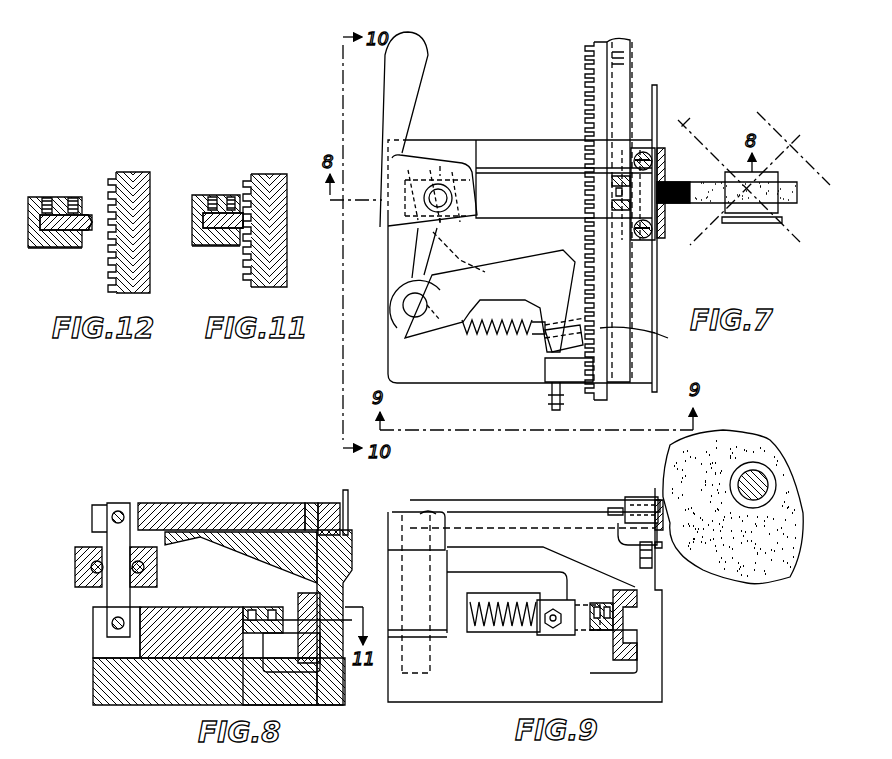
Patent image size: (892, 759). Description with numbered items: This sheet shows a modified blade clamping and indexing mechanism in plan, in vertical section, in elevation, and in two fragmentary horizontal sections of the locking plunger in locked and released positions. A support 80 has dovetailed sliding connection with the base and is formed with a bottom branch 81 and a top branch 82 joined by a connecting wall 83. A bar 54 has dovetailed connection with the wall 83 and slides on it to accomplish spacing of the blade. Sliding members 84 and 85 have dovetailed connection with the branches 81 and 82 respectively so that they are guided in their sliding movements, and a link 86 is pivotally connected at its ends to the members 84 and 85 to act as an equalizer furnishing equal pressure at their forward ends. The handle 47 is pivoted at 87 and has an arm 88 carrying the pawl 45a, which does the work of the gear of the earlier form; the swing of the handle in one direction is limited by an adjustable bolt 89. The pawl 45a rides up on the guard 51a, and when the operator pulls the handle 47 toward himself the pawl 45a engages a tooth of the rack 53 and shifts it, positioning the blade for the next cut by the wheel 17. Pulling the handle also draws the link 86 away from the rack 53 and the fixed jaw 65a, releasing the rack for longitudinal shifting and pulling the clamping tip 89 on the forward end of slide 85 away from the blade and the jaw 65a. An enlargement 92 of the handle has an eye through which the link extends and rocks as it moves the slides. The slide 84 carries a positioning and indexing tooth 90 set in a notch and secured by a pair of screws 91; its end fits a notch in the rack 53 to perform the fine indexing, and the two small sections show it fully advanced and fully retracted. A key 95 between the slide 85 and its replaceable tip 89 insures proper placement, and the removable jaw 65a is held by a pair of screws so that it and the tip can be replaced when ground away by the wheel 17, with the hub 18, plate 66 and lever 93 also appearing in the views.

In FIG. 7, the wheel 17 is at (700, 205).
In FIG. 9, the wheel 17 is at (733, 507).
In FIG. 9, the shaft hub 18 is at (760, 478).
In FIG. 7, the pawl 45a is at (564, 314).
In FIG. 7, the handle 47 is at (405, 91).
In FIG. 7, the guard 51a is at (649, 338).
In FIG. 7, the rack 53 is at (597, 62).
In FIG. 12, the rack 53 is at (126, 175).
In FIG. 11, the rack 53 is at (264, 176).
In FIG. 8, the rack 53 is at (263, 612).
In FIG. 9, the rack 53 is at (601, 616).
In FIG. 7, the bar 54 is at (620, 60).
In FIG. 8, the bar 54 is at (303, 600).
In FIG. 9, the bar 54 is at (613, 631).
In FIG. 7, the fixed jaw 65a is at (661, 158).
In FIG. 8, the fixed jaw 65a is at (349, 505).
In FIG. 9, the fixed jaw 65a is at (662, 537).
In FIG. 7, the side plate 66 is at (658, 95).
In FIG. 7, the support 80 is at (465, 378).
In FIG. 8, the support 80 is at (330, 703).
In FIG. 9, the support 80 is at (660, 690).
In FIG. 8, the bottom branch 81 is at (95, 680).
In FIG. 8, the top branch 82 is at (195, 548).
In FIG. 8, the connecting wall 83 is at (322, 605).
In FIG. 12, the sliding member 84 is at (48, 249).
In FIG. 11, the sliding member 84 is at (215, 248).
In FIG. 8, the sliding member 84 is at (167, 608).
In FIG. 9, the sliding member 84 is at (510, 600).
In FIG. 7, the sliding member 85 is at (564, 179).
In FIG. 8, the sliding member 85 is at (175, 505).
In FIG. 9, the sliding member 85 is at (520, 500).
In FIG. 8, the link 86 is at (112, 593).
In FIG. 7, the pivot 87 is at (416, 308).
In FIG. 7, the arm 88 is at (545, 345).
In FIG. 7, the adjustable bolt / clamping tip 89 is at (650, 185).
In FIG. 8, the adjustable bolt / clamping tip 89 is at (330, 503).
In FIG. 9, the adjustable bolt / clamping tip 89 is at (553, 630).
In FIG. 12, the pawl tooth 90 is at (84, 218).
In FIG. 12, the screws 91 is at (74, 198).
In FIG. 8, the screws 91 is at (291, 652).
In FIG. 7, the enlargement 92 is at (395, 205).
In FIG. 8, the enlargement 92 is at (76, 567).
In FIG. 9, the enlargement 92 is at (416, 592).
In FIG. 7, the lever 93 is at (396, 262).
In FIG. 7, the key 95 is at (615, 194).
In FIG. 8, the key 95 is at (310, 503).